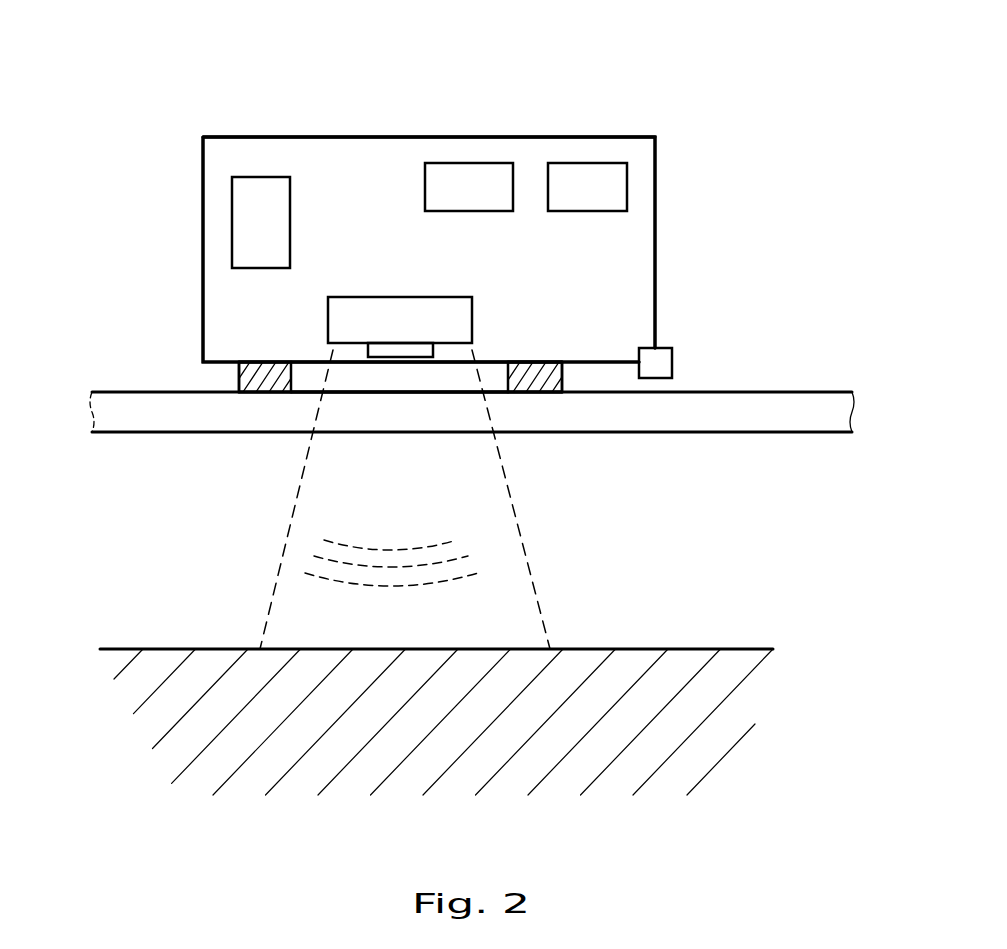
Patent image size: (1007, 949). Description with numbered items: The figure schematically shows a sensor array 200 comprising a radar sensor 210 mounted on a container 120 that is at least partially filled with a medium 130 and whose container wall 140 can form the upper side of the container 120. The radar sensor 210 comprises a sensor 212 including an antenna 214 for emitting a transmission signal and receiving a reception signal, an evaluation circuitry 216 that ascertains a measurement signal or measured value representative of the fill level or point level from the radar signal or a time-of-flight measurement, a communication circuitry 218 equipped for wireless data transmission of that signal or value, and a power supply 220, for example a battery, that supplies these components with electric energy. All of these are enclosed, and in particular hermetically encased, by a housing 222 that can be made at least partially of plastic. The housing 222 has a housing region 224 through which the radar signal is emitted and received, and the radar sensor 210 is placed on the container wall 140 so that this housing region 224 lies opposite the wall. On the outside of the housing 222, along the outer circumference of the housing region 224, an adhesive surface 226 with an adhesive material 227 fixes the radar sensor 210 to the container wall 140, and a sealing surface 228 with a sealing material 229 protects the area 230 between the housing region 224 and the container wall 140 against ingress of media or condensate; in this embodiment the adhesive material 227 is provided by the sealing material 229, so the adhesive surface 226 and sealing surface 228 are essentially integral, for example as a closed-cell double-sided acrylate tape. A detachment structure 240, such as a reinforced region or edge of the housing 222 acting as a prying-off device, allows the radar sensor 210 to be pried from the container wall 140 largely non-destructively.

The sensor array 200 is at (677, 114).
The radar sensor 210 is at (240, 135).
The housing 222 is at (378, 135).
The communication circuitry 218 is at (468, 161).
The evaluation circuitry 216 is at (585, 161).
The power supply 220 is at (230, 210).
The sensor 212 is at (345, 295).
The antenna 214 is at (403, 360).
The housing region 224 is at (439, 368).
The adhesive surface 226 is at (255, 361).
The sealing surface 228 is at (237, 378).
The adhesive material 227 is at (550, 380).
The sealing material 229 is at (540, 394).
The area 230 is at (370, 380).
The container wall 140 is at (94, 389).
The detachment structure 240 is at (675, 361).
The container 120 is at (859, 411).
The medium 130 is at (155, 667).